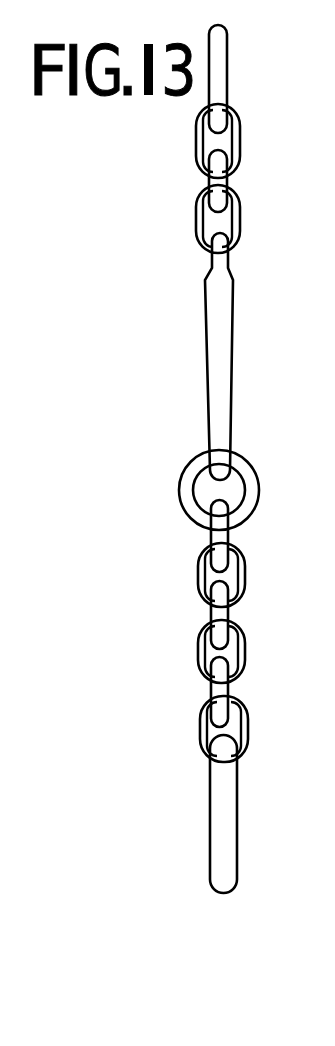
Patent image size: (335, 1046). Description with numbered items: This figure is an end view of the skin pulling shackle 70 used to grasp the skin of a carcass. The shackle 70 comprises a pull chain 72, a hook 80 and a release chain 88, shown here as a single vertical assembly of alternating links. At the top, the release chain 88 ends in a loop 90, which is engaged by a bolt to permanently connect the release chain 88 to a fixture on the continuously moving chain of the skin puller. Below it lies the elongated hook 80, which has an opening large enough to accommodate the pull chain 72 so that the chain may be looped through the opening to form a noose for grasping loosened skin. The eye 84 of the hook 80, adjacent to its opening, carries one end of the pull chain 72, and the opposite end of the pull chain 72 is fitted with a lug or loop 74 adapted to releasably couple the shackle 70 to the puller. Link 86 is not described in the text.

The shackle 70 is at (263, 356).
The pull chain 72 is at (222, 620).
The lug or loop 74 is at (222, 813).
The hook 80 is at (220, 312).
The eye 84 is at (222, 453).
The chain link 86 is at (222, 259).
The release chain 88 is at (226, 153).
The loop 90 is at (215, 87).